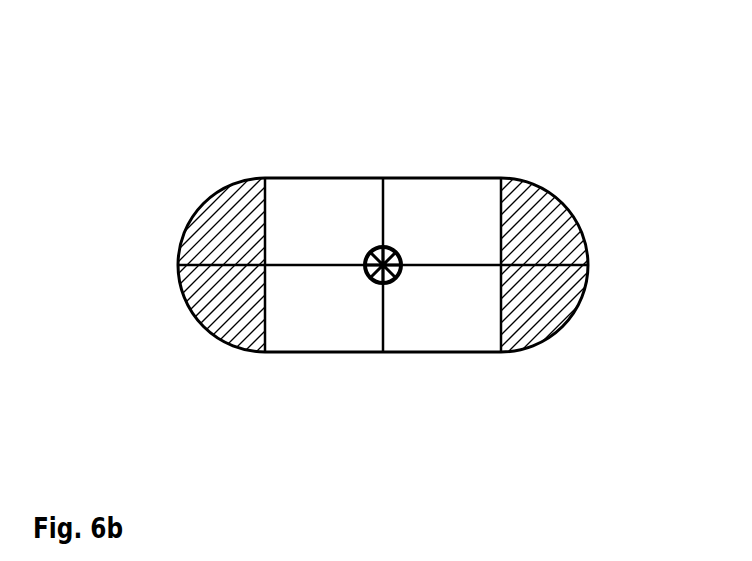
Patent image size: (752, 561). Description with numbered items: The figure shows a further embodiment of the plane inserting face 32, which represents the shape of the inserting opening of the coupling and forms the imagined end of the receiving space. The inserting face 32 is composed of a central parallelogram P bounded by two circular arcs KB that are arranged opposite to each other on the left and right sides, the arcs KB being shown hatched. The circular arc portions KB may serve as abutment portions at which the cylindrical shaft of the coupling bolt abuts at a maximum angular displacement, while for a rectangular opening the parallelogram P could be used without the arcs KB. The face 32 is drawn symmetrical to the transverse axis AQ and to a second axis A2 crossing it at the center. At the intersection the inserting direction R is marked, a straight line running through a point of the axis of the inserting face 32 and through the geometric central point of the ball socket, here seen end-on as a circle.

The inserting face 32 is at (385, 47).
The circular arcs KB is at (233, 236).
The central parallelogram P is at (308, 322).
The transverse axis AQ is at (383, 207).
The longitudinal axis A2 is at (472, 267).
The inserting direction R is at (378, 285).